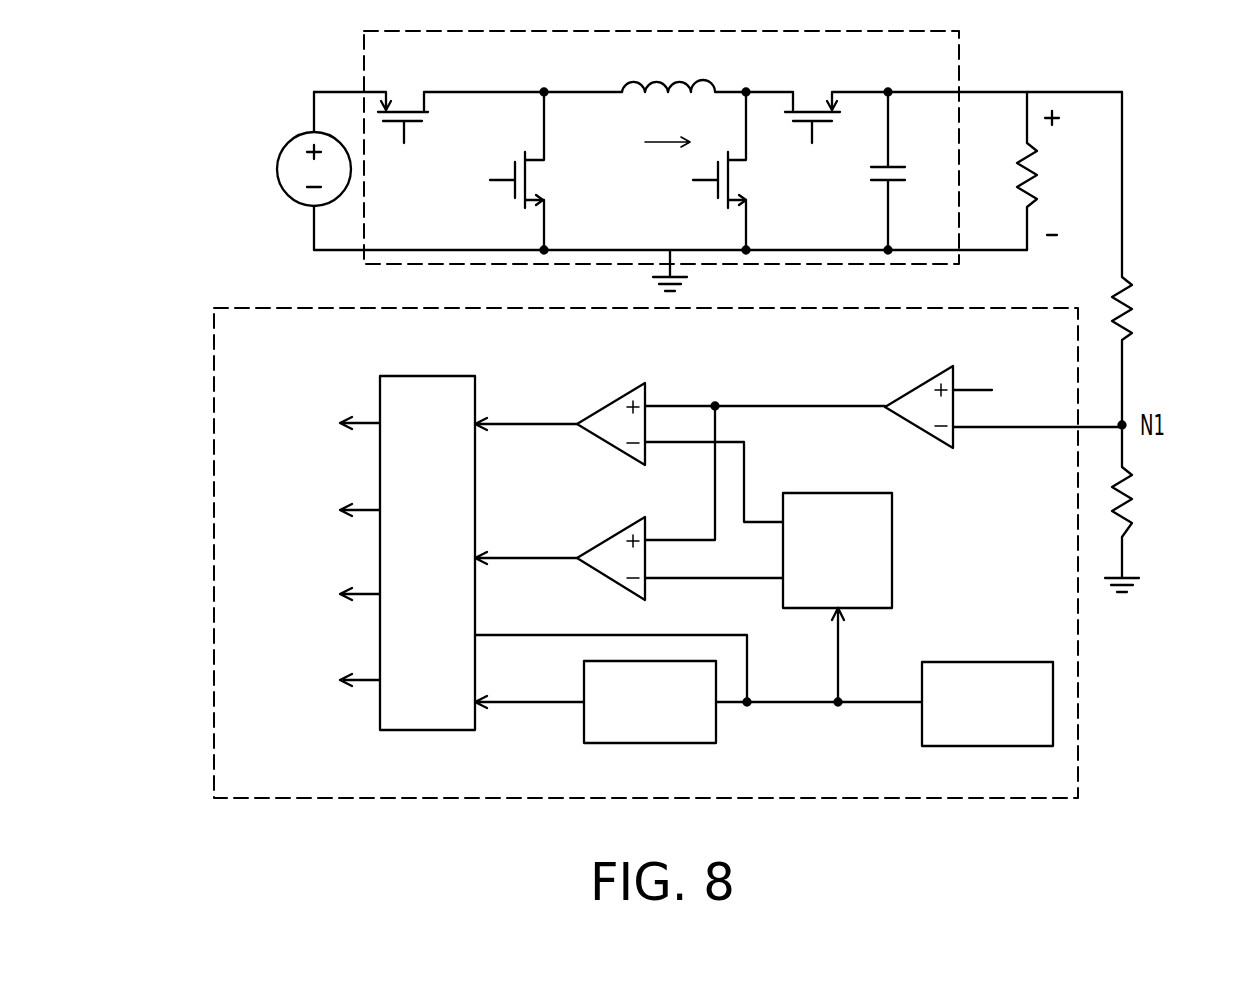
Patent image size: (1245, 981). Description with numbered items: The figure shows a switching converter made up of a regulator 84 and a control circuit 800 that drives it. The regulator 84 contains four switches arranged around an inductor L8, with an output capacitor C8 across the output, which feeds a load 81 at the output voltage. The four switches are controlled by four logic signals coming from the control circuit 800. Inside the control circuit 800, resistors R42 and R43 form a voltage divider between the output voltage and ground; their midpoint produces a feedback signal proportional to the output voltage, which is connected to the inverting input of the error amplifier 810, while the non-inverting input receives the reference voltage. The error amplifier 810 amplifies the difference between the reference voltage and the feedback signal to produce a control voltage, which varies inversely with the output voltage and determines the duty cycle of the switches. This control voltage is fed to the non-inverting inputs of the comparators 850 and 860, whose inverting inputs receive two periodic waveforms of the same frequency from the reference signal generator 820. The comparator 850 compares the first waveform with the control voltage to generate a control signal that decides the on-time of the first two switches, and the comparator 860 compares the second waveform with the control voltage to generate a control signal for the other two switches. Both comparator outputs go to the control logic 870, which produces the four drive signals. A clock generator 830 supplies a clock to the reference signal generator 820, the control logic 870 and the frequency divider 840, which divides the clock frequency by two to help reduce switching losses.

The regulator 84 is at (678, 148).
The load 81 is at (1013, 193).
The control circuit 800 is at (1078, 725).
The error amplifier 810 is at (916, 385).
The reference signal generator 820 is at (838, 493).
The clock generator 830 is at (1008, 662).
The frequency divider 840 is at (650, 743).
The comparator 850 is at (612, 402).
The comparator 860 is at (612, 537).
The control logic 870 is at (430, 376).
The inductor L8 is at (645, 66).
The output capacitor C8 is at (901, 175).
The resistor R42 is at (1130, 323).
The resistor R43 is at (1130, 520).